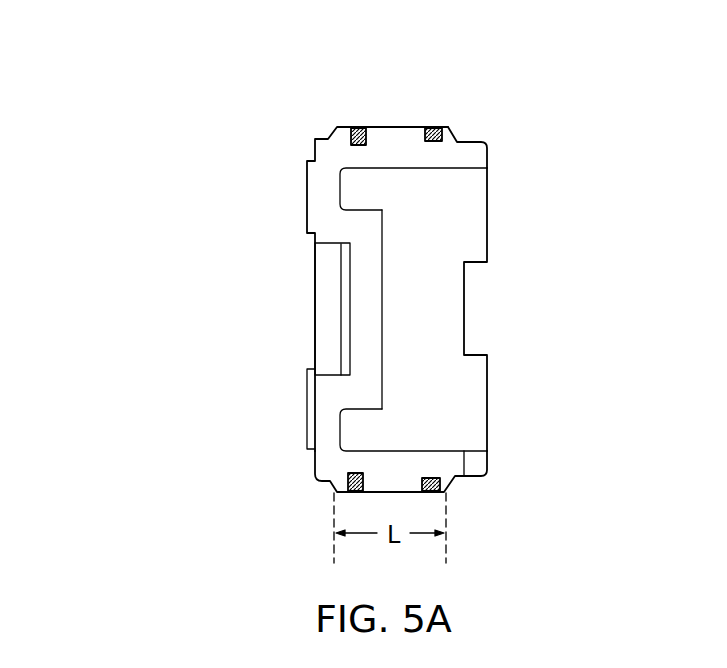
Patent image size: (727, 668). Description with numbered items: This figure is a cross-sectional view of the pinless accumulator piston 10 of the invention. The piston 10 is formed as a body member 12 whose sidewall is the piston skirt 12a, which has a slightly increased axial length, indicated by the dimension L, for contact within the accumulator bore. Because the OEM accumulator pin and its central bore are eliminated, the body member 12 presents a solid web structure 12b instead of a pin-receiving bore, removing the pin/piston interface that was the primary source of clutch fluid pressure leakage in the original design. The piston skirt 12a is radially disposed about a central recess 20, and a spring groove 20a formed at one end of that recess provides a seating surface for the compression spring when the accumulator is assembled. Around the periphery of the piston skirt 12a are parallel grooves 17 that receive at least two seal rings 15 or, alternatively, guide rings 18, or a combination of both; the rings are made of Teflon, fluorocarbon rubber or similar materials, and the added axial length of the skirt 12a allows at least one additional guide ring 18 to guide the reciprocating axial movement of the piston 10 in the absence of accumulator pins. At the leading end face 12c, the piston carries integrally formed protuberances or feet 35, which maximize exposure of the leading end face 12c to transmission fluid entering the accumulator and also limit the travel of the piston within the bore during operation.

The pinless accumulator piston 10 is at (412, 83).
The body member 12 is at (323, 209).
The piston skirt 12a is at (478, 153).
The solid web structure 12b is at (357, 308).
The leading end face 12c is at (313, 463).
The seal ring 15 is at (360, 127).
The parallel grooves 17 is at (357, 145).
The guide ring 18 is at (437, 128).
The central recess 20 is at (438, 302).
The spring groove 20a is at (345, 185).
The protuberances or feet 35 is at (308, 390).